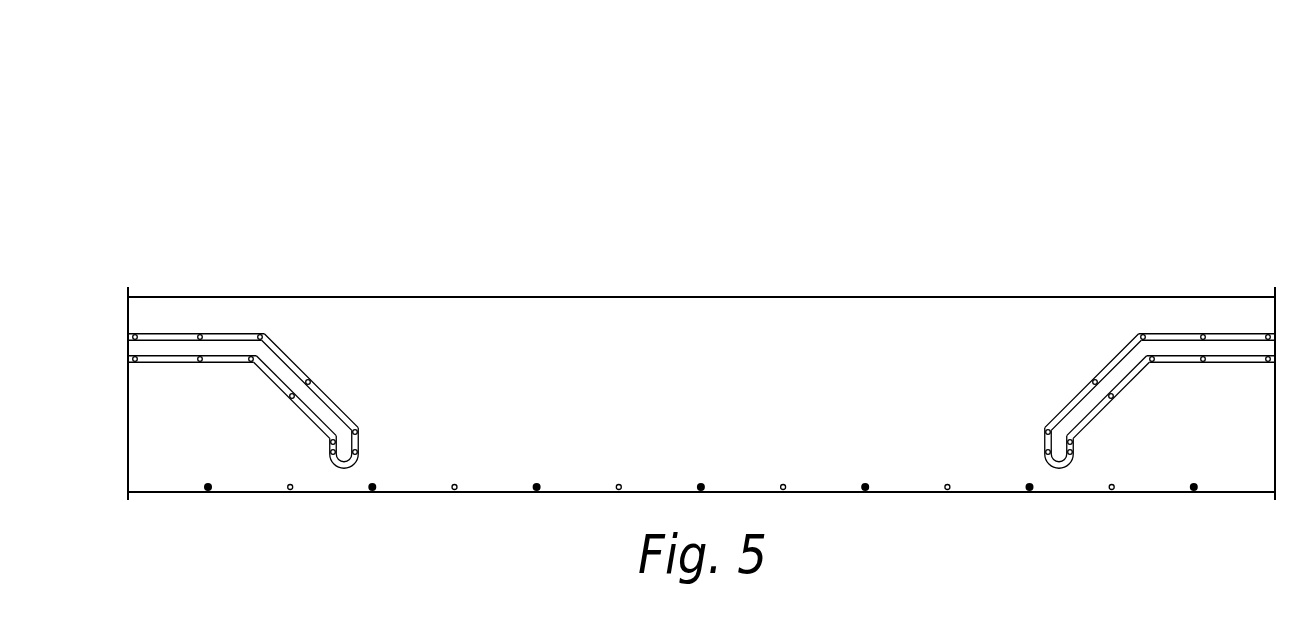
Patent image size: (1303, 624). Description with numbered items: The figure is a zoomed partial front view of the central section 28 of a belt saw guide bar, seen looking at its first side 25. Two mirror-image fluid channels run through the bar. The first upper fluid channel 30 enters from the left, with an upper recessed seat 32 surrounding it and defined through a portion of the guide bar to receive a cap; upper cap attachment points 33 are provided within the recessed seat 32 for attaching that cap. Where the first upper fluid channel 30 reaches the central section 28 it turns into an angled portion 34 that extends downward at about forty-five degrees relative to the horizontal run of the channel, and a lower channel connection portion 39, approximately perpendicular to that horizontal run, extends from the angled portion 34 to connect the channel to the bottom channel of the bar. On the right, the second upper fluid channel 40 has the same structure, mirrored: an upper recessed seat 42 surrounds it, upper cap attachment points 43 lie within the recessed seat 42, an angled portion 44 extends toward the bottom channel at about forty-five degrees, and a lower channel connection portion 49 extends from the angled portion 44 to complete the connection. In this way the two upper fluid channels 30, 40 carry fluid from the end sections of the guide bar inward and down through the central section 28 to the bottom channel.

The first side 25 is at (180, 178).
The central section 28 is at (690, 268).
The first upper fluid channel 30 is at (243, 333).
The upper recessed seat 32 is at (286, 363).
The upper cap attachment points 33 is at (311, 383).
The angled portion 34 is at (270, 415).
The lower channel connection portion 39 is at (380, 452).
The second upper fluid channel 40 is at (1186, 333).
The upper recessed seat 42 is at (1115, 366).
The upper cap attachment points 43 is at (1093, 384).
The angled portion 44 is at (1138, 419).
The lower channel connection portion 49 is at (1020, 450).